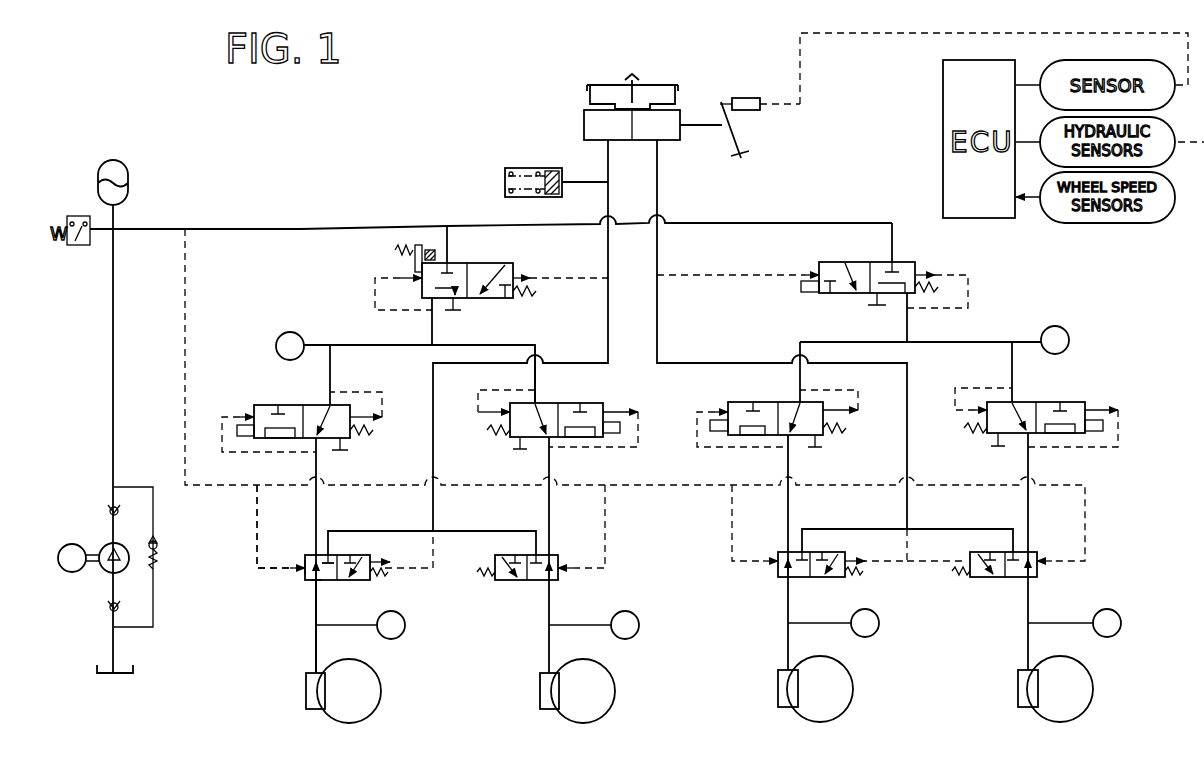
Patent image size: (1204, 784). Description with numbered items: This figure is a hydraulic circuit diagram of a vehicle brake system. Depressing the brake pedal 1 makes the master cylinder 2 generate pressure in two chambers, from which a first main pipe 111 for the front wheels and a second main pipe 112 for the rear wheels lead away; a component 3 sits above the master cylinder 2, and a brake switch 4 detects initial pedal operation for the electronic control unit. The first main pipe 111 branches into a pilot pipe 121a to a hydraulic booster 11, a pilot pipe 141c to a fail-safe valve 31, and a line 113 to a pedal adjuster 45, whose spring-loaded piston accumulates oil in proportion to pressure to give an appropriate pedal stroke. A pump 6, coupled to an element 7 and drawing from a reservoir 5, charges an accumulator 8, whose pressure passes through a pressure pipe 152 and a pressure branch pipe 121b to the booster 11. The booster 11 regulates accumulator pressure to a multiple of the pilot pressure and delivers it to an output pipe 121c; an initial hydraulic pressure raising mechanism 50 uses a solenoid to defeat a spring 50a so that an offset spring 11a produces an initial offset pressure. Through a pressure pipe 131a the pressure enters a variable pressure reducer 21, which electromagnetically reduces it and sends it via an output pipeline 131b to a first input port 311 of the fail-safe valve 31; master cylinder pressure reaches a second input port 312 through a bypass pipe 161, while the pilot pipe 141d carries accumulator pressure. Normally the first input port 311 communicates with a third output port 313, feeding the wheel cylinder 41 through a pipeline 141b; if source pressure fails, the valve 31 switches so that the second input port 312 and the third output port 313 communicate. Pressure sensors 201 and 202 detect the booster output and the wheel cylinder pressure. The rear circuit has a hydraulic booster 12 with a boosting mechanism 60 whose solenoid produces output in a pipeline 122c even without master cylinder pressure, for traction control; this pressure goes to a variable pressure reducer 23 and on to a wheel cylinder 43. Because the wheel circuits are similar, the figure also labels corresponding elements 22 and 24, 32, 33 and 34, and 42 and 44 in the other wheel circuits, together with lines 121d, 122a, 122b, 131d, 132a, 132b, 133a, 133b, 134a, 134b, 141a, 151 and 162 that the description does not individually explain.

The brake pedal 1 is at (748, 152).
The master cylinder 2 is at (685, 106).
The reservoir 3 is at (638, 82).
The brake switch 4 is at (748, 98).
The reservoir 5 is at (113, 678).
The pump 6 is at (108, 572).
The motor 7 is at (78, 545).
The accumulator 8 is at (128, 183).
The hydraulic booster 11 is at (516, 262).
The offset spring 11a is at (538, 292).
The hydraulic booster 12 is at (912, 262).
The variable pressure reducer 21 is at (285, 403).
The pressure increase control valve (FL) 22 is at (608, 402).
The variable pressure reducer 23 is at (760, 400).
The pressure increase control valve (RL) 24 is at (1092, 400).
The fail-safe valve 31 is at (298, 582).
The pressure reduction control valve (FL) 32 is at (562, 582).
The pressure reduction control valve (RR) 33 is at (776, 580).
The pressure reduction control valve (RL) 34 is at (1040, 580).
The wheel cylinder 41 is at (306, 703).
The front left wheel cylinder 42 is at (540, 703).
The wheel cylinder 43 is at (778, 700).
The rear left wheel cylinder 44 is at (1018, 700).
The pedal adjuster 45 is at (506, 172).
The initial hydraulic pressure raising mechanism 50 is at (395, 250).
The spring 50a is at (405, 268).
The boosting mechanism 60 is at (805, 292).
The first main pipe 111 is at (608, 160).
The second main pipe 112 is at (657, 186).
The line 113 is at (590, 183).
The pilot pipe 121a is at (548, 278).
The pressure branch pipe 121b is at (447, 246).
The output pipe 121c is at (433, 335).
The pilot passage 121d is at (375, 298).
The pilot passage 122a is at (700, 275).
The supply passage 122b is at (893, 225).
The pipeline 122c is at (907, 327).
The pressure pipe 131a is at (330, 366).
The output pipeline 131b is at (316, 466).
The pilot passage 131d is at (222, 438).
The inlet passage 132a is at (535, 382).
The wheel cylinder passage 132b is at (549, 466).
The inlet passage 133a is at (800, 377).
The wheel cylinder passage 133b is at (788, 466).
The inlet passage 134a is at (1012, 376).
The wheel cylinder passage 134b is at (1028, 468).
The return passage 141a is at (330, 533).
The pipeline 141b is at (316, 600).
The pilot pipe 141c is at (405, 570).
The pilot pipe 141d is at (257, 568).
The pump discharge passage 151 is at (113, 326).
The pressure pipe 152 is at (268, 227).
The bypass pipe 161 is at (608, 342).
The master cylinder passage 162 is at (657, 315).
The pressure sensor 201 is at (283, 340).
The pressure sensor 202 is at (398, 638).
The first input port 311 is at (305, 555).
The second input port 312 is at (328, 555).
The third output port 313 is at (316, 583).